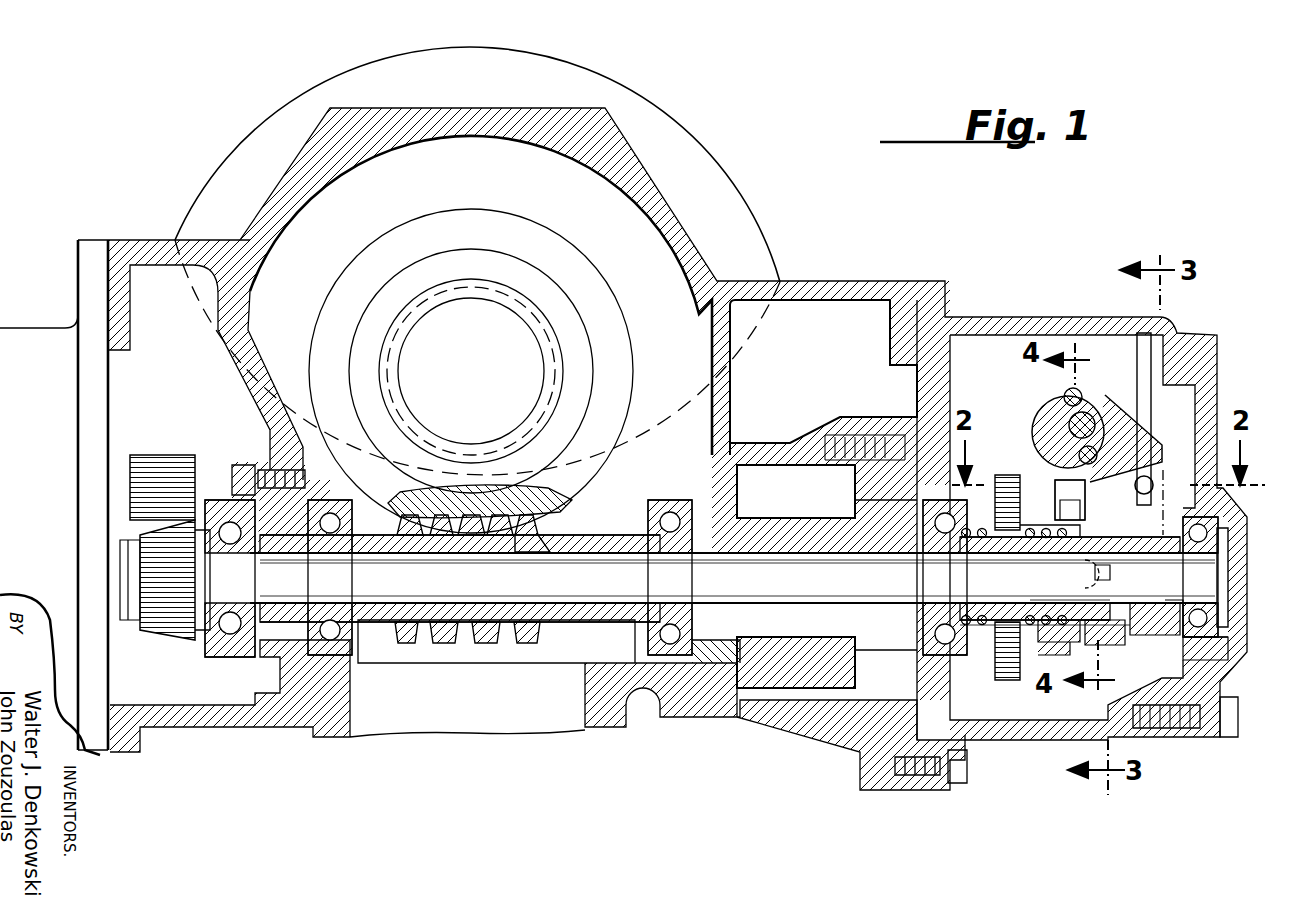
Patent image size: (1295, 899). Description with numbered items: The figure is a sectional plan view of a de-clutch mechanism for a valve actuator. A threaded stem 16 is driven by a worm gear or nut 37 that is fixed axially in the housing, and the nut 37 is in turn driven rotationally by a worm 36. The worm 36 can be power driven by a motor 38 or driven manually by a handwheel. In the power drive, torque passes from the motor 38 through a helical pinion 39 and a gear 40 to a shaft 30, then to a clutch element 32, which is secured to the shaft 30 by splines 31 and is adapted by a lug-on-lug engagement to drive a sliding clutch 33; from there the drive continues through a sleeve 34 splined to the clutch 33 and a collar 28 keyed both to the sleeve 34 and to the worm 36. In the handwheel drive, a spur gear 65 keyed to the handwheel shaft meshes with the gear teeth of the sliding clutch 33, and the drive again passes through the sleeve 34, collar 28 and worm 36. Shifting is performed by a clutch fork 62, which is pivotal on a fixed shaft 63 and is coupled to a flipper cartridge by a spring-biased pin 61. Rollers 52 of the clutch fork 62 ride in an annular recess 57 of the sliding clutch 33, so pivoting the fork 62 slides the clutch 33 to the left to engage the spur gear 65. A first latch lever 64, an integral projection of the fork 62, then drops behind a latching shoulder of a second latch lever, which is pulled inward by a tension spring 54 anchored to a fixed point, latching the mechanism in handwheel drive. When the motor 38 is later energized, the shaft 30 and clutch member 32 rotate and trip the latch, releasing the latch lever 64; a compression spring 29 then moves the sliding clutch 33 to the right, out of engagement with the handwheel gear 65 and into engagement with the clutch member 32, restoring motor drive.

The threaded stem 16 is at (486, 378).
The collar 28 is at (822, 622).
The compression spring 29 is at (984, 530).
The shaft 30 is at (600, 575).
The splines 31 is at (1180, 612).
The clutch element 32 is at (1155, 608).
The sliding clutch 33 is at (1080, 638).
The sleeve 34 is at (972, 625).
The worm 36 is at (418, 630).
The worm gear or nut 37 is at (548, 512).
The motor 38 is at (15, 343).
The helical pinion 39 is at (165, 487).
The gear 40 is at (167, 633).
The rollers 52 is at (1090, 570).
The spring 54 is at (1150, 478).
The annular recess 57 is at (1108, 645).
The spring-biased pin 61 is at (1088, 405).
The clutch fork 62 is at (1064, 392).
The fixed shaft 63 is at (1068, 420).
The first latch lever 64 is at (1152, 458).
The spur gear 65 is at (1003, 478).